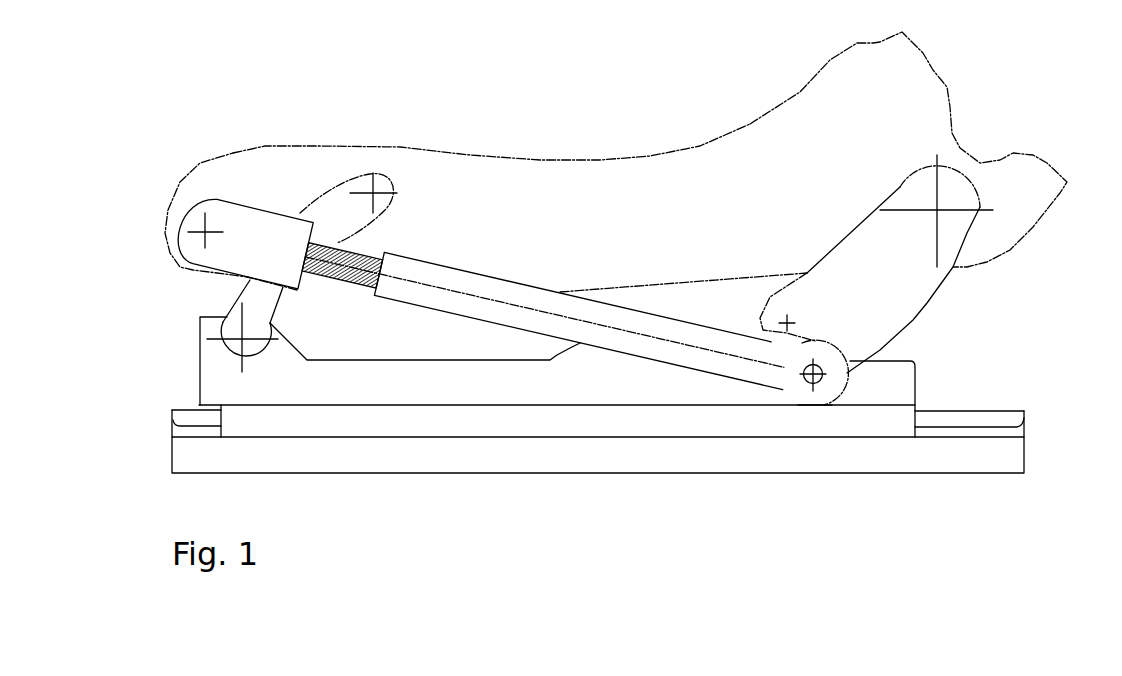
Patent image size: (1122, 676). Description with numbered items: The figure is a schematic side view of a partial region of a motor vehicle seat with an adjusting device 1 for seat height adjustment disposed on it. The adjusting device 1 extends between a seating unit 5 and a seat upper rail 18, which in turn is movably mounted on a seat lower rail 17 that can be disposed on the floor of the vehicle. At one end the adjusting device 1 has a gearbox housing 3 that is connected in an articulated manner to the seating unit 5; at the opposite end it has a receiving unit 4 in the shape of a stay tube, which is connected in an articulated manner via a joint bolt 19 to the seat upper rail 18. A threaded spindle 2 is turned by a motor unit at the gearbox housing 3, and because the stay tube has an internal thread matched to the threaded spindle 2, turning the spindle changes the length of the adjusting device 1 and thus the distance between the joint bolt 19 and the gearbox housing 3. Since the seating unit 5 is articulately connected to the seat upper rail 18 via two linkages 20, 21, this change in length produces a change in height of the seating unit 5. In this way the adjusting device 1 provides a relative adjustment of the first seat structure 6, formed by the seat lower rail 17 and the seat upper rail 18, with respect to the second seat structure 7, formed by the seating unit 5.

The adjusting device 1 is at (636, 80).
The threaded spindle 2 is at (340, 250).
The gearbox housing 3 is at (250, 222).
The receiving unit 4 is at (457, 303).
The seating unit 5 is at (456, 178).
The first seat structure 6 is at (742, 503).
The second seat structure 7 is at (140, 201).
The seat lower rail 17 is at (940, 458).
The seat upper rail 18 is at (897, 422).
The joint bolt 19 is at (820, 372).
The linkage 20 is at (912, 292).
The linkage 21 is at (253, 298).